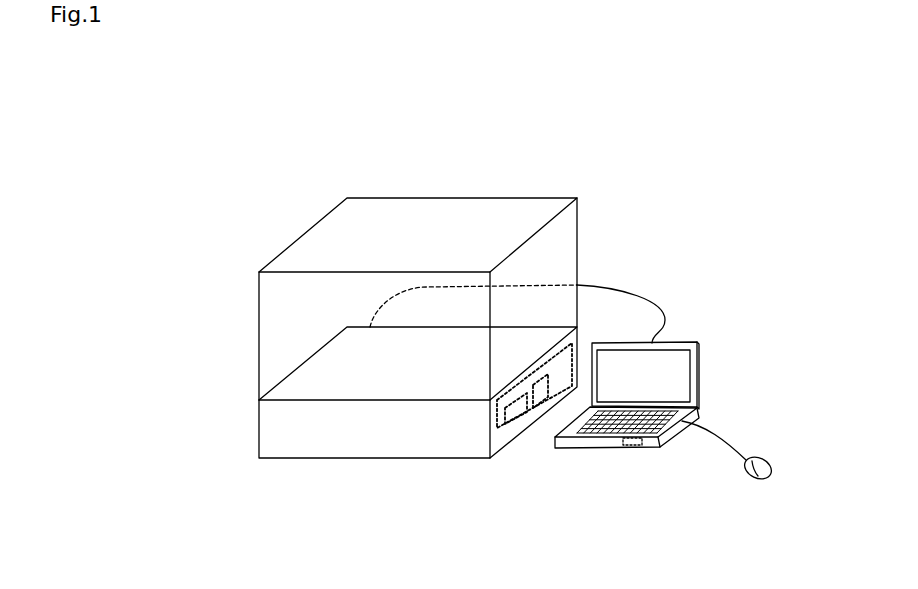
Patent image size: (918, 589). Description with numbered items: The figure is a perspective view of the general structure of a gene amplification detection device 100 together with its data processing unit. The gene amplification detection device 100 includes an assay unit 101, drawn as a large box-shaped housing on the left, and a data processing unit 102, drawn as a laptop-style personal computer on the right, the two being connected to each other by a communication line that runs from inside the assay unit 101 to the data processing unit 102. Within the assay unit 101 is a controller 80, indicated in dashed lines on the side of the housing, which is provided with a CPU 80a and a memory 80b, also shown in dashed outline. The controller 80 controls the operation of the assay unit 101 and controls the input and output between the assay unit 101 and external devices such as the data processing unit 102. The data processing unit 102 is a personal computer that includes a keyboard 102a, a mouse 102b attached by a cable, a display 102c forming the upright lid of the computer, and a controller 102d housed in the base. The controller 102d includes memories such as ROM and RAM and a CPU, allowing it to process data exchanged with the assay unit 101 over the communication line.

The gene amplification detection device 100 is at (620, 112).
The assay unit 101 is at (520, 215).
The data processing unit 102 is at (673, 343).
The keyboard 102a is at (563, 424).
The mouse 102b is at (763, 478).
The display 102c is at (683, 362).
The controller 102d is at (645, 447).
The controller 80 is at (497, 413).
The CPU 80a is at (507, 423).
The memory 80b is at (533, 407).